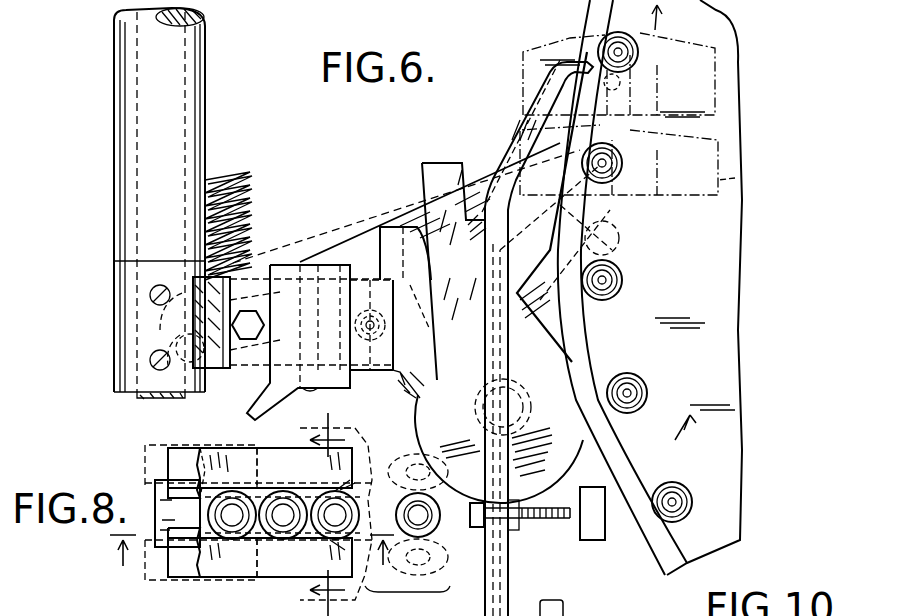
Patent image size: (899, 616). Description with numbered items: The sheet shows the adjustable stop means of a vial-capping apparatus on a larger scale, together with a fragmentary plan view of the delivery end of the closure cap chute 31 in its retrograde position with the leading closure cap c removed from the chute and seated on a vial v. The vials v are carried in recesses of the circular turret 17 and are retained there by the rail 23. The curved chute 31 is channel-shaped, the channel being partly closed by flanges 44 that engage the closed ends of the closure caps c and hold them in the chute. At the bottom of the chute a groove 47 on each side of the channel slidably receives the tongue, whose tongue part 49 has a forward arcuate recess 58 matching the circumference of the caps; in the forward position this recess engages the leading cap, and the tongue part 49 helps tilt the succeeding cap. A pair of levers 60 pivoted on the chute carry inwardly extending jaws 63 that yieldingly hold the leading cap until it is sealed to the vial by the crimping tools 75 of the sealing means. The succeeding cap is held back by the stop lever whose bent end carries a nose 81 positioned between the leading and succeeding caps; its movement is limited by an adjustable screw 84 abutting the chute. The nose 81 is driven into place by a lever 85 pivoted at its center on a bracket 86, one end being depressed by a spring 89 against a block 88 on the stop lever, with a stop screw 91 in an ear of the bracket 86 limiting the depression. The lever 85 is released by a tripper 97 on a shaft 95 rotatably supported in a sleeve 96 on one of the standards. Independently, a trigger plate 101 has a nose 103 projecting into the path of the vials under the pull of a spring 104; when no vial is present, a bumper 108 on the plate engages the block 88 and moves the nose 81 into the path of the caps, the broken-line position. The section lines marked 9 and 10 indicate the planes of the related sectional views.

In FIG. 6, the sleeve 96 is at (200, 103).
In FIG. 6, the shaft 95 is at (157, 393).
In FIG. 6, the spring 104 is at (242, 180).
In FIG. 6, the tripper 97 is at (218, 362).
In FIG. 6, the bracket 86 is at (290, 265).
In FIG. 6, the stop screw 91 is at (260, 319).
In FIG. 6, the spring 89 is at (370, 316).
In FIG. 6, the lever 85 is at (380, 370).
In FIG. 6, the bumper 108 is at (404, 228).
In FIG. 6, the plate 101 is at (358, 237).
In FIG. 6, the block 88 is at (443, 165).
In FIG. 6, the nose 81 is at (588, 65).
In FIG. 6, the nose 103 is at (582, 200).
In FIG. 6, the rail 23 is at (660, 555).
In FIG. 6, the turret 17 is at (733, 318).
In FIG. 6, the vial V is at (690, 502).
In FIG. 6, the jaws 63 is at (655, 37).
In FIG. 8, the jaws 63 is at (407, 580).
In FIG. 6, the levers 60 is at (735, 178).
In FIG. 8, the levers 60 is at (356, 430).
In FIG. 6, the screw 84 is at (553, 521).
In FIG. 6, the chute 31 is at (594, 535).
In FIG. 8, the chute 31 is at (205, 455).
In FIG. 6, the closure cap C is at (440, 520).
In FIG. 6, the crimping tools 75 is at (445, 570).
In FIG. 8, the groove 47 is at (260, 512).
In FIG. 8, the flanges 44 is at (178, 460).
In FIG. 8, the tongue part 49 is at (155, 492).
In FIG. 8, the arcuate recess 58 is at (353, 498).
In FIG. 8, the section line 10 is at (309, 514).
In FIG. 8, the section line 9 is at (248, 540).